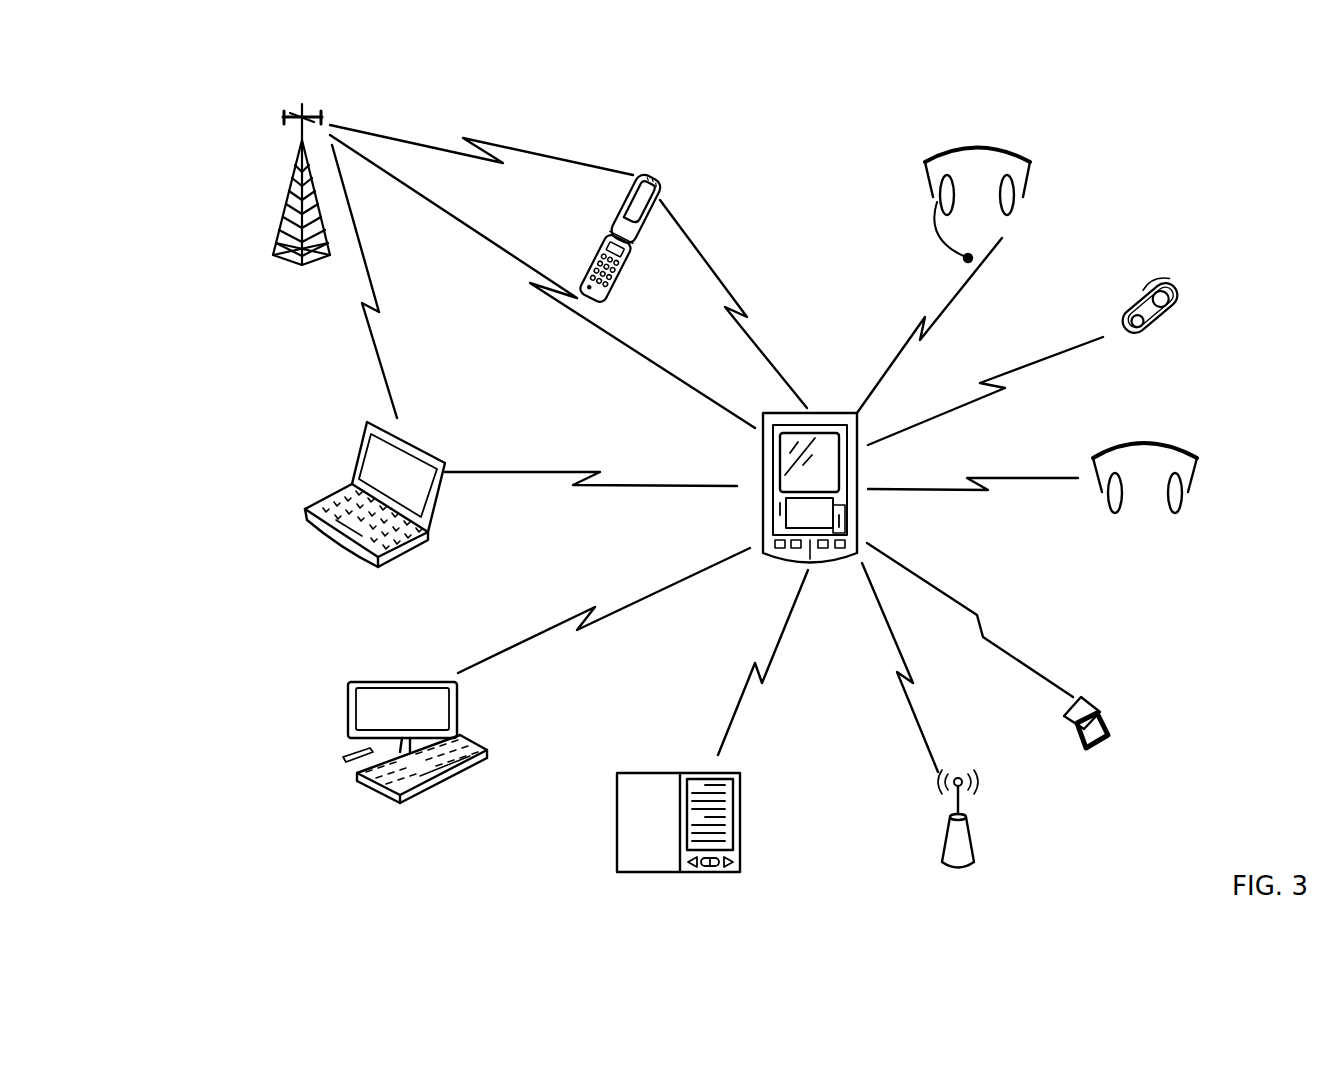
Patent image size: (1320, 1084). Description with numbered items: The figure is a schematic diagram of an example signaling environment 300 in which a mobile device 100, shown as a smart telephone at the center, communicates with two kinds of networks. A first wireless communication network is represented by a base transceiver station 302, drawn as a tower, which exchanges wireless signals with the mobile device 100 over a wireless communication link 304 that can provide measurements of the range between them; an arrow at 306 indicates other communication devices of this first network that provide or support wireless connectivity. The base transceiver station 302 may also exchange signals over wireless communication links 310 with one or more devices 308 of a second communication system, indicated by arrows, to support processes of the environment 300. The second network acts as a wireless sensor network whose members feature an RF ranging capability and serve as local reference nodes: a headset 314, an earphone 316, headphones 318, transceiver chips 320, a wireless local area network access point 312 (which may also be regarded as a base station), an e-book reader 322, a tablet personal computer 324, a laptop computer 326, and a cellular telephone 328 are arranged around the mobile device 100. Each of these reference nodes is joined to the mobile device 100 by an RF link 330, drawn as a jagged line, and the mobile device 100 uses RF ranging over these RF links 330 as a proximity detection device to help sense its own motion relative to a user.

The mobile device 100 is at (761, 470).
The example environment 300 is at (1267, 136).
The base transceiver station 302 is at (288, 205).
The wireless communication link 304 is at (458, 215).
The other communication devices 306 is at (287, 639).
The devices of a second communication system 308 is at (934, 497).
The wireless communication links 310 is at (532, 152).
The wireless local area network access point 312 is at (967, 817).
The headset 314 is at (984, 142).
The earphone 316 is at (1164, 282).
The headphones 318 is at (1148, 440).
The transceiver chips 320 is at (1100, 714).
The e-book reader 322 is at (742, 790).
The tablet personal computer 324 is at (348, 712).
The laptop computer 326 is at (432, 450).
The cellular telephone 328 is at (660, 195).
The RF links 330 is at (757, 340).